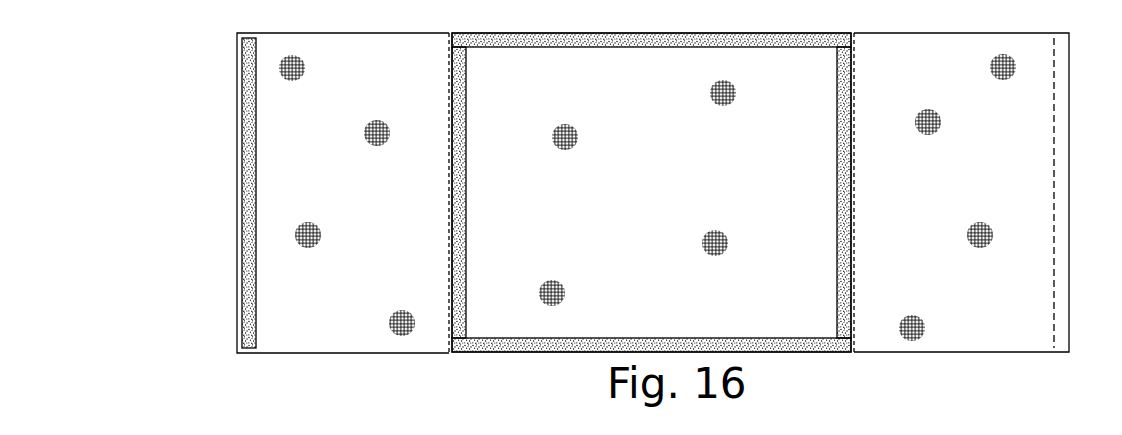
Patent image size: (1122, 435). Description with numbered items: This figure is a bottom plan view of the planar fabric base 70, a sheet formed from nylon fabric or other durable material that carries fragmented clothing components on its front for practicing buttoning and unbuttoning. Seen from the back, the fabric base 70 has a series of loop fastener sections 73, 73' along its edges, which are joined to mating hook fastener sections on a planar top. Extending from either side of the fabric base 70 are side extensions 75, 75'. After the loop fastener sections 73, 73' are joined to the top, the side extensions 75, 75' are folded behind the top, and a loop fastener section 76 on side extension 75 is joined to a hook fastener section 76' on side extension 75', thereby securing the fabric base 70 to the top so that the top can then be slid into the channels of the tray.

The planar fabric base 70 is at (957, 47).
The loop fastener section 73 is at (651, 192).
The loop fastener section 73' is at (651, 192).
The side extension 75 is at (343, 176).
The side extension 75' is at (961, 224).
The loop fastener section 76 is at (224, 193).
The hook fastener section 76' is at (1088, 193).